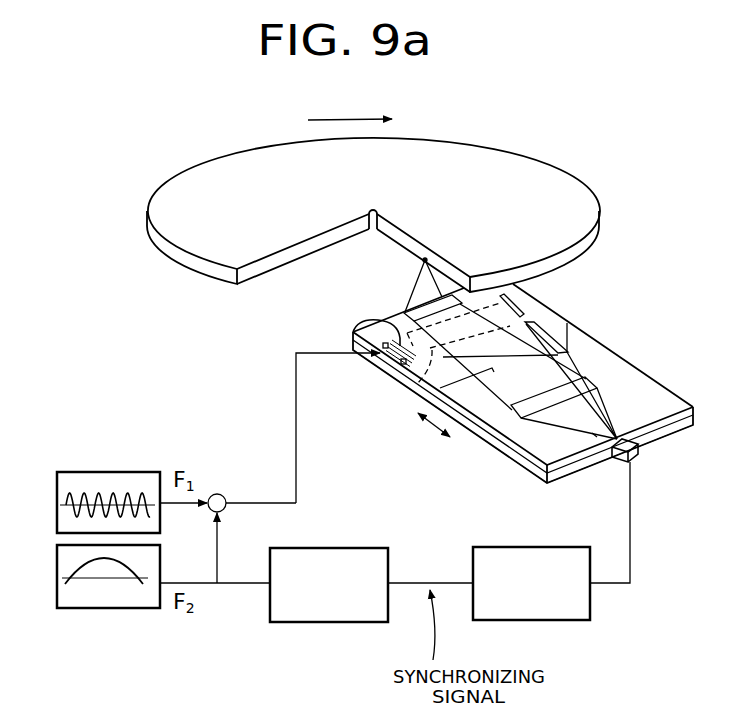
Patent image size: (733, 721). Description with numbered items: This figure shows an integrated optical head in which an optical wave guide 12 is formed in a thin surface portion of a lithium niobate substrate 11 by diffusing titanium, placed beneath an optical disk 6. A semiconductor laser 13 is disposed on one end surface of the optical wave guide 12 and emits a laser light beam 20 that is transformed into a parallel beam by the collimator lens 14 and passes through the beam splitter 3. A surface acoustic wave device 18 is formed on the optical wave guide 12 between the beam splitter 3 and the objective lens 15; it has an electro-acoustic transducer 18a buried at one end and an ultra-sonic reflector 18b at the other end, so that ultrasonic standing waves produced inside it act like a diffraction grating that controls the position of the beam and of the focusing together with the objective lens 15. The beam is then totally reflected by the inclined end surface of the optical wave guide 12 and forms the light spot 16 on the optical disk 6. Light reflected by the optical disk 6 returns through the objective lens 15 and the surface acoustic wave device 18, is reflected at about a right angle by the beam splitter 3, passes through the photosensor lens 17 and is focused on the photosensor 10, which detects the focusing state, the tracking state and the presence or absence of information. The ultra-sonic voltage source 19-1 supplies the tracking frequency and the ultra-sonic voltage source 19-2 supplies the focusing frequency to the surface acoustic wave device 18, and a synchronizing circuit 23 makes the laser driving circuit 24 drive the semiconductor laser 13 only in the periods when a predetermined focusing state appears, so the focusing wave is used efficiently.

The optical disk 6 is at (528, 172).
The beam splitter 3 is at (422, 399).
The optical wave guide 12 is at (647, 391).
The substrate 11 is at (678, 424).
The electro-acoustic transducer 18a is at (362, 320).
The ultra-sonic reflector 18b is at (516, 302).
The surface acoustic wave device 18 is at (402, 391).
The light spot 16 is at (422, 260).
The objective lens 15 is at (400, 312).
The collimator lens 14 is at (512, 410).
The photosensor lens 17 is at (572, 338).
The photosensor 10 is at (567, 327).
The semiconductor laser 13 is at (637, 452).
The laser light beam 20 is at (592, 433).
The ultra-sonic voltage source 19-1 is at (77, 472).
The ultra-sonic voltage source 19-2 is at (73, 611).
The synchronizing circuit 23 is at (338, 623).
The laser driving circuit 24 is at (532, 622).